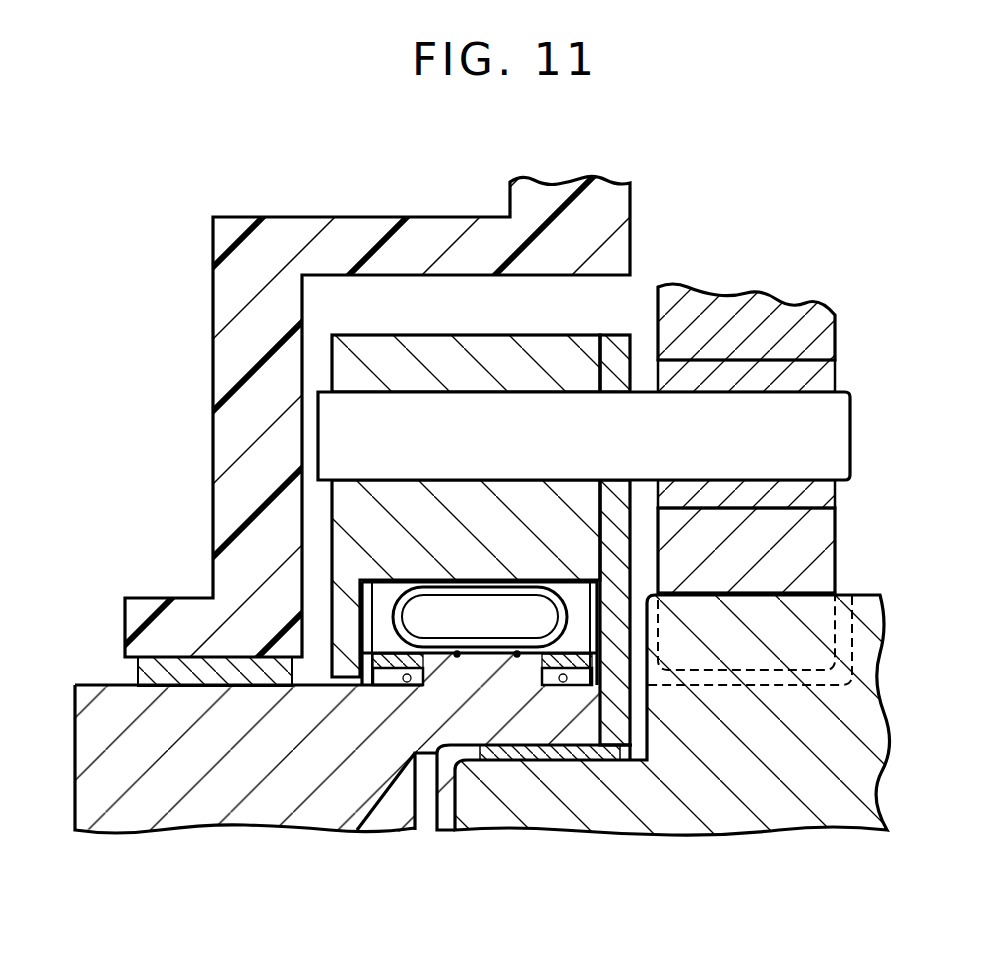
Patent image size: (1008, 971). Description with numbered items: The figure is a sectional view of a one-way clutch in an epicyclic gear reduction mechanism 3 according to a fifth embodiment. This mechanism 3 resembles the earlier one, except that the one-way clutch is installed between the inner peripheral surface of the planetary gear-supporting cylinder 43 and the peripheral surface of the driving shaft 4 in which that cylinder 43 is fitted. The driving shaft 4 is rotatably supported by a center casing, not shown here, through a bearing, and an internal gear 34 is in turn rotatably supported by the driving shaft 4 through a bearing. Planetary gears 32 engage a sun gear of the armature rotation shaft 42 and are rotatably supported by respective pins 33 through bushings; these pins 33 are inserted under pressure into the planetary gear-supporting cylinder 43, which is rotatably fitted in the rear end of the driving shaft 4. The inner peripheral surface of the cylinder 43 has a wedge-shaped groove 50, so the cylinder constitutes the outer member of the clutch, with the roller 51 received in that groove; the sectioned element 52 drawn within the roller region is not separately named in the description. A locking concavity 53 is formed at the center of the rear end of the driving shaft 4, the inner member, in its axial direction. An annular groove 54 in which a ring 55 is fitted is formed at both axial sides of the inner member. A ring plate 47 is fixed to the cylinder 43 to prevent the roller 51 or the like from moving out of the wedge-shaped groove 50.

The epicyclic gear reduction mechanism 3 is at (747, 215).
The driving shaft 4 is at (233, 815).
The planetary gears 32 is at (810, 548).
The pins 33 is at (827, 452).
The internal gear 34 is at (235, 421).
The armature rotation shaft 42 is at (818, 810).
The planetary gear-supporting cylinder 43 is at (532, 350).
The ring plate 47 is at (615, 353).
The wedge-shaped groove 50 is at (457, 657).
The roller 51 is at (382, 600).
The sensor tube 52 is at (565, 622).
The locking concavity 53 is at (517, 657).
The annular groove 54 is at (407, 682).
The ring 55 is at (390, 662).